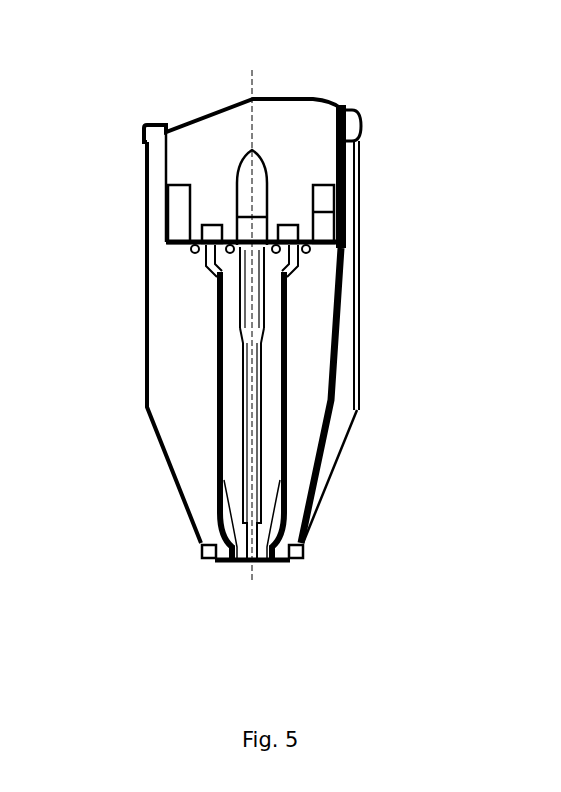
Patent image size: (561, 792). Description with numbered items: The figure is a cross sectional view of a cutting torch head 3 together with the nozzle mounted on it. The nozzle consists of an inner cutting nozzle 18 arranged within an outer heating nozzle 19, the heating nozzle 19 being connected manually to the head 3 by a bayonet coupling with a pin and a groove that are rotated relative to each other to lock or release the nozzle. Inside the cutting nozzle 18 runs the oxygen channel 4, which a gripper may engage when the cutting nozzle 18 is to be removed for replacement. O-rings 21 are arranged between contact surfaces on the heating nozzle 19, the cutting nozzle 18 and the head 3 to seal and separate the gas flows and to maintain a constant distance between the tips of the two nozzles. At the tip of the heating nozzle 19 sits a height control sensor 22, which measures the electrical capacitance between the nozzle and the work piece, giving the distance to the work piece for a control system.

The head 3 is at (303, 114).
The oxygen channel 4 is at (237, 482).
The cutting nozzle 18 is at (227, 367).
The heating nozzle 19 is at (169, 274).
The O-rings 21 is at (292, 258).
The height control sensor 22 is at (315, 562).